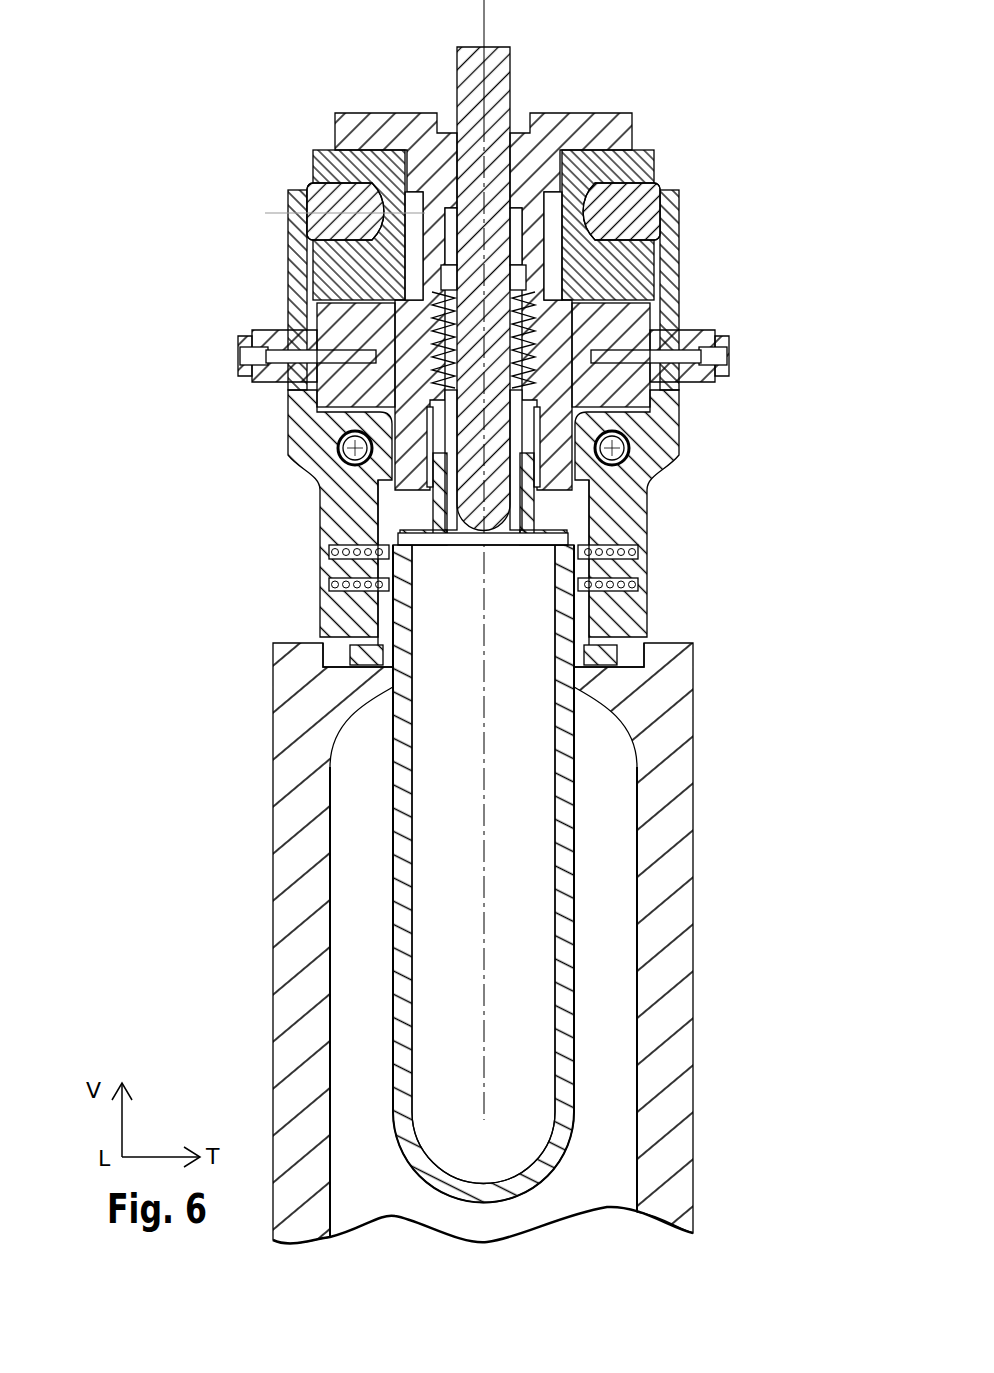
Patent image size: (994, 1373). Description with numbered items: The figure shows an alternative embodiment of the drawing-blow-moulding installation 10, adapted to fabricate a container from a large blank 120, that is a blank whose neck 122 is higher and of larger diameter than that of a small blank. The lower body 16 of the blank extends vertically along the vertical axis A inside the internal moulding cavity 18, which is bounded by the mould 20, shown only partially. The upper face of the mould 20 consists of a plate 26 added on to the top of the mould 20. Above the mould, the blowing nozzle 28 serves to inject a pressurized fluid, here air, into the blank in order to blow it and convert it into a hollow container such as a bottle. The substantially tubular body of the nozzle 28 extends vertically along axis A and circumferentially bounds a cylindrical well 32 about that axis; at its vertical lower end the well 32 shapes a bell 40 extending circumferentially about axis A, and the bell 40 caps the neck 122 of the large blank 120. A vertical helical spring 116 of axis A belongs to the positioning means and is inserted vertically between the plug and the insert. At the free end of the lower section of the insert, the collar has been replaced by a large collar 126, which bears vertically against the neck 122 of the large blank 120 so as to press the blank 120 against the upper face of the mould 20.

The blow-moulding installation 10 is at (688, 71).
The lower body 16 is at (574, 1006).
The internal moulding cavity 18 is at (330, 787).
The mould 20 is at (255, 752).
The plate 26 is at (659, 662).
The blowing nozzle 28 is at (692, 163).
The cylindrical well 32 is at (550, 285).
The bell 40 is at (605, 527).
The vertical helical spring 116 is at (540, 336).
The large blank 120 is at (605, 856).
The neck 122 is at (424, 612).
The large collar 126 is at (543, 540).